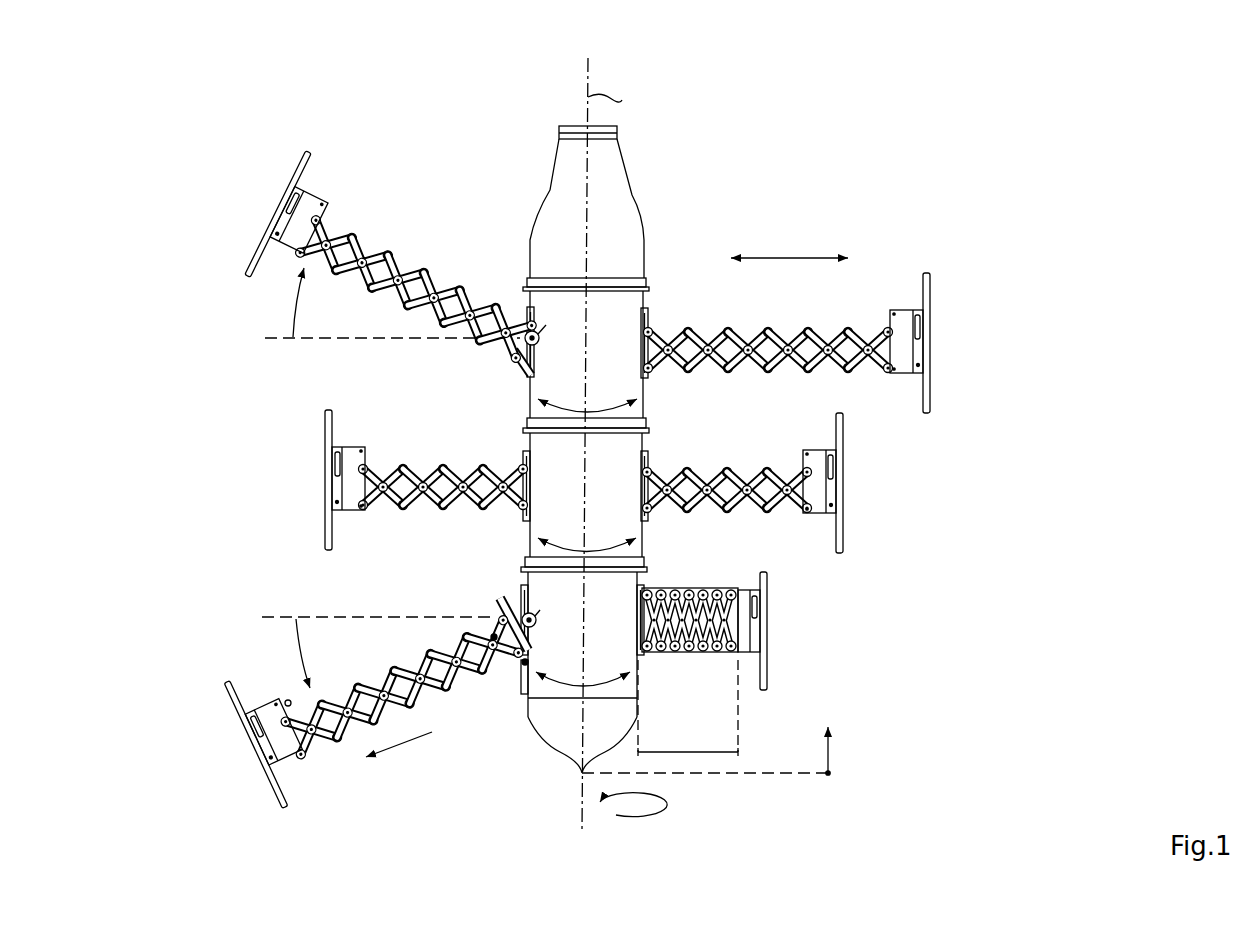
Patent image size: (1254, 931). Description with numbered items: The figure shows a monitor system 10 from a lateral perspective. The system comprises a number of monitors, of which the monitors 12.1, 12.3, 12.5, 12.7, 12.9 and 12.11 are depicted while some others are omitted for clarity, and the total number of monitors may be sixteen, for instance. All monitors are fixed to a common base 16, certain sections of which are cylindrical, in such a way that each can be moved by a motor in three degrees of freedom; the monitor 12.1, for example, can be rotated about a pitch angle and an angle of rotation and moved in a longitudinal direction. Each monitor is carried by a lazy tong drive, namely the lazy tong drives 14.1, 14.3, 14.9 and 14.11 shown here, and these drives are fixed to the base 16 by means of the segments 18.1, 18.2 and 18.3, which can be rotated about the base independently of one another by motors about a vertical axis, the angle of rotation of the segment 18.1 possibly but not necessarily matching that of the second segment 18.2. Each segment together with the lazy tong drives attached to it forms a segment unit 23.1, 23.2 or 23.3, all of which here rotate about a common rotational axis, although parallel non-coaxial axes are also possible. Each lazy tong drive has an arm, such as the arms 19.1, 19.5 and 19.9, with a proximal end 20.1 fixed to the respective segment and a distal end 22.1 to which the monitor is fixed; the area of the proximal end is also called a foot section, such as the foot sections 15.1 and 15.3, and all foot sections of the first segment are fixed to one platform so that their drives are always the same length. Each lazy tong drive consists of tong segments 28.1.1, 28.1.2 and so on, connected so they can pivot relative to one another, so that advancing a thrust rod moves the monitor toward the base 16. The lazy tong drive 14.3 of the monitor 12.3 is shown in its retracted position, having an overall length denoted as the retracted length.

The monitor system 10 is at (1157, 132).
The monitor 12.1 is at (268, 748).
The monitor 12.3 is at (768, 655).
The monitor 12.5 is at (322, 488).
The monitor 12.7 is at (846, 486).
The monitor 12.9 is at (276, 222).
The monitor 12.11 is at (931, 355).
The lazy tong drive 14.1 is at (311, 748).
The lazy tong drive 14.3 is at (687, 653).
The lazy tong drive 14.9 is at (478, 160).
The lazy tong drive 14.11 is at (822, 338).
The foot section 15.1 is at (499, 584).
The foot section 15.3 is at (655, 582).
The base 16 is at (641, 201).
The segment 18.1 is at (600, 686).
The segment 18.2 is at (586, 487).
The segment 18.3 is at (581, 348).
The arm 19.1 is at (383, 660).
The arm 19.5 is at (399, 450).
The arm 19.9 is at (386, 226).
The proximal end 20.1 is at (514, 688).
The distal end 22.1 is at (287, 698).
The segment unit 23.1 is at (823, 598).
The segment unit 23.2 is at (995, 447).
The segment unit 23.3 is at (356, 143).
The tong segment 28.1.1 is at (492, 634).
The tong segment 28.1.2 is at (522, 665).